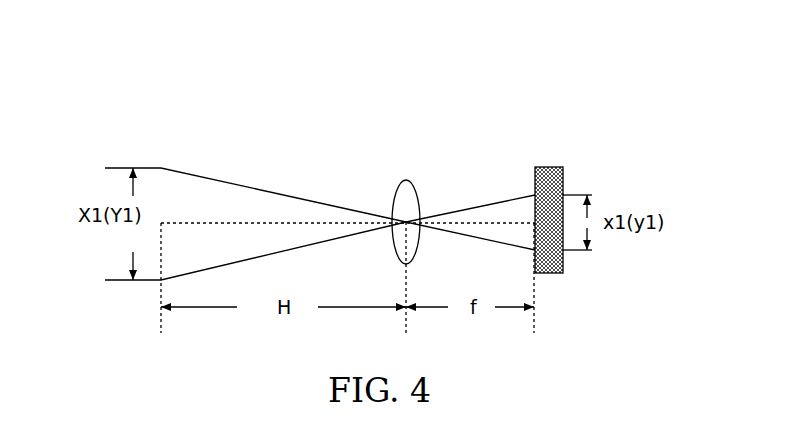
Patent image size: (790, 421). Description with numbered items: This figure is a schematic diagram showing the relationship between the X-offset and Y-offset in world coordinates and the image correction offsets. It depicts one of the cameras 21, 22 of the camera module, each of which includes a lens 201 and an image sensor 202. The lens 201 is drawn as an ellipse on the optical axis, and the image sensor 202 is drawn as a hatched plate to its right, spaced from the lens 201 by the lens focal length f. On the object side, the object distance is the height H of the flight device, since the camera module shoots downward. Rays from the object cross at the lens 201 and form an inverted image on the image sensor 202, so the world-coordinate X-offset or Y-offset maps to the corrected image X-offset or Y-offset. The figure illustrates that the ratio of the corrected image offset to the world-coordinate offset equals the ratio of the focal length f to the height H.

The camera 21 is at (588, 110).
The camera 22 is at (501, 193).
The lens 201 is at (406, 180).
The image sensor 202 is at (553, 167).